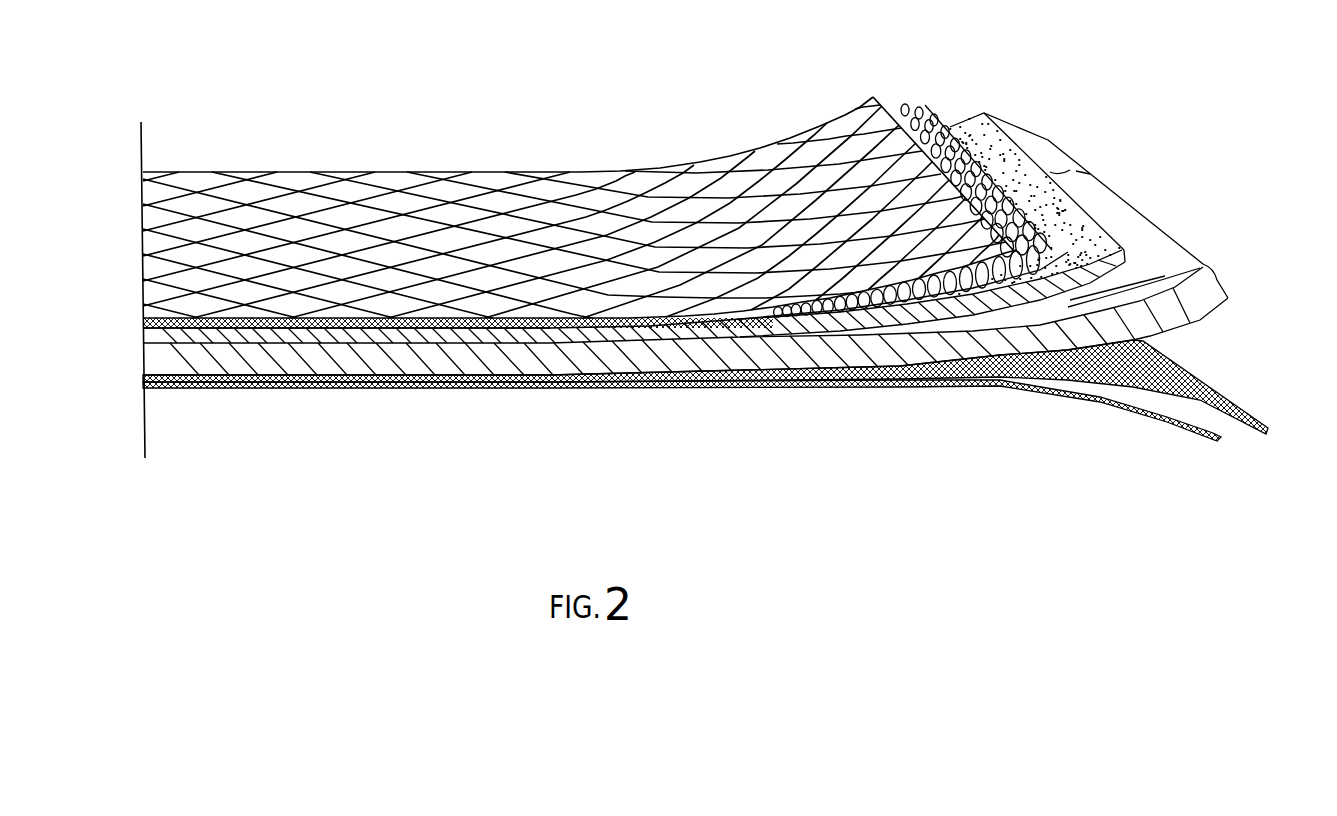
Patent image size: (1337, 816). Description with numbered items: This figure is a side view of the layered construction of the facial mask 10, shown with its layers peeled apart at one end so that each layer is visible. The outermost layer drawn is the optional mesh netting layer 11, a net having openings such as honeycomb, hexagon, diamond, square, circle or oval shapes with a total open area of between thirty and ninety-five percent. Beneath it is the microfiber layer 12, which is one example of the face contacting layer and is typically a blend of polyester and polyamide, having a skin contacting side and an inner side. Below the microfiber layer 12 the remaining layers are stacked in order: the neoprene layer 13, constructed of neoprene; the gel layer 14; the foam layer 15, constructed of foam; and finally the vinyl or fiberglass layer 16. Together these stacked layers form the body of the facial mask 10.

The sheet material / laminate 10 is at (347, 104).
The mesh netting layer 11 is at (775, 145).
The microfiber layer 12 is at (914, 125).
The neoprene layer 13 is at (978, 128).
The gel layer 14 is at (1050, 163).
The foam layer 15 is at (1243, 410).
The vinyl or fiberglass layer 16 is at (1212, 438).